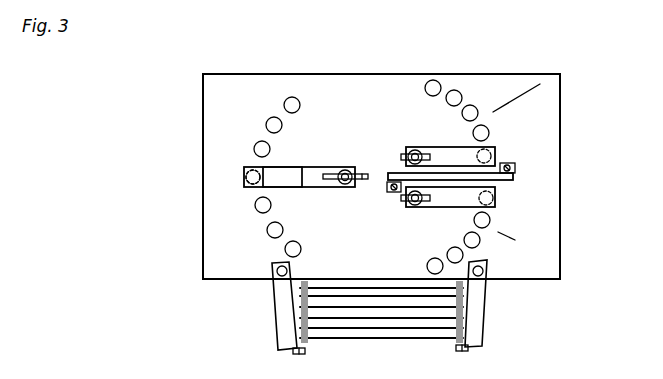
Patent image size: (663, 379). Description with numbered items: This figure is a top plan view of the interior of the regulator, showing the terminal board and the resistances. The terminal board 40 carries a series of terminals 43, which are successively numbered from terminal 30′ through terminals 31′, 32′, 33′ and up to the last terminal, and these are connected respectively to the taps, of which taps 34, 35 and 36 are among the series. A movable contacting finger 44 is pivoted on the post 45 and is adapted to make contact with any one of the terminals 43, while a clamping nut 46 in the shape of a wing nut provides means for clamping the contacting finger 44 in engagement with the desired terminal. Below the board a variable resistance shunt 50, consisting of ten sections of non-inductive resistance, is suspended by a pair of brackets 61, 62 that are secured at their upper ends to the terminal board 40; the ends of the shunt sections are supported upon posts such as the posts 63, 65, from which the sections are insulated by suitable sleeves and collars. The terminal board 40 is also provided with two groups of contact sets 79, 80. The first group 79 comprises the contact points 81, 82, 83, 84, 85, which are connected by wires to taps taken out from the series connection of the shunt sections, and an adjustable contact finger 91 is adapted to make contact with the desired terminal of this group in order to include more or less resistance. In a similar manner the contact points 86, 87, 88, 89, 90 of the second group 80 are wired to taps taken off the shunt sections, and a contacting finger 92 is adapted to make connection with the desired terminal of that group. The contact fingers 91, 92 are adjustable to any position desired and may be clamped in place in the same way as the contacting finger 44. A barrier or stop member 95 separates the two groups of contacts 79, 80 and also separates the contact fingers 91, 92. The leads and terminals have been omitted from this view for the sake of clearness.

The terminal board 40 is at (203, 251).
The tap 36 is at (284, 105).
The tap 35 is at (266, 125).
The tap 34 is at (254, 149).
The terminal 33′ is at (246, 181).
The terminal 32′ is at (256, 207).
The terminal 31′ is at (272, 238).
The terminal 30′ is at (300, 252).
The terminals 43 is at (244, 152).
The movable contacting finger 44 is at (305, 175).
The post 45 is at (350, 171).
The clamping nut 46 is at (365, 182).
The variable resistance shunt 50 is at (432, 333).
The bracket 61 is at (280, 300).
The bracket 62 is at (473, 320).
The post 63 is at (294, 352).
The post 65 is at (468, 350).
The contact set 79 is at (493, 112).
The contact set 80 is at (498, 232).
The contact point 81 is at (433, 80).
The contact point 82 is at (456, 90).
The contact point 83 is at (476, 106).
The contact point 84 is at (489, 133).
The contact point 85 is at (491, 156).
The contact point 86 is at (493, 198).
The contact point 87 is at (490, 220).
The contact point 88 is at (478, 246).
The contact point 89 is at (448, 253).
The contact point 90 is at (427, 266).
The adjustable contact finger 91 is at (448, 165).
The contacting finger 92 is at (447, 195).
The barrier or stop member 95 is at (513, 177).